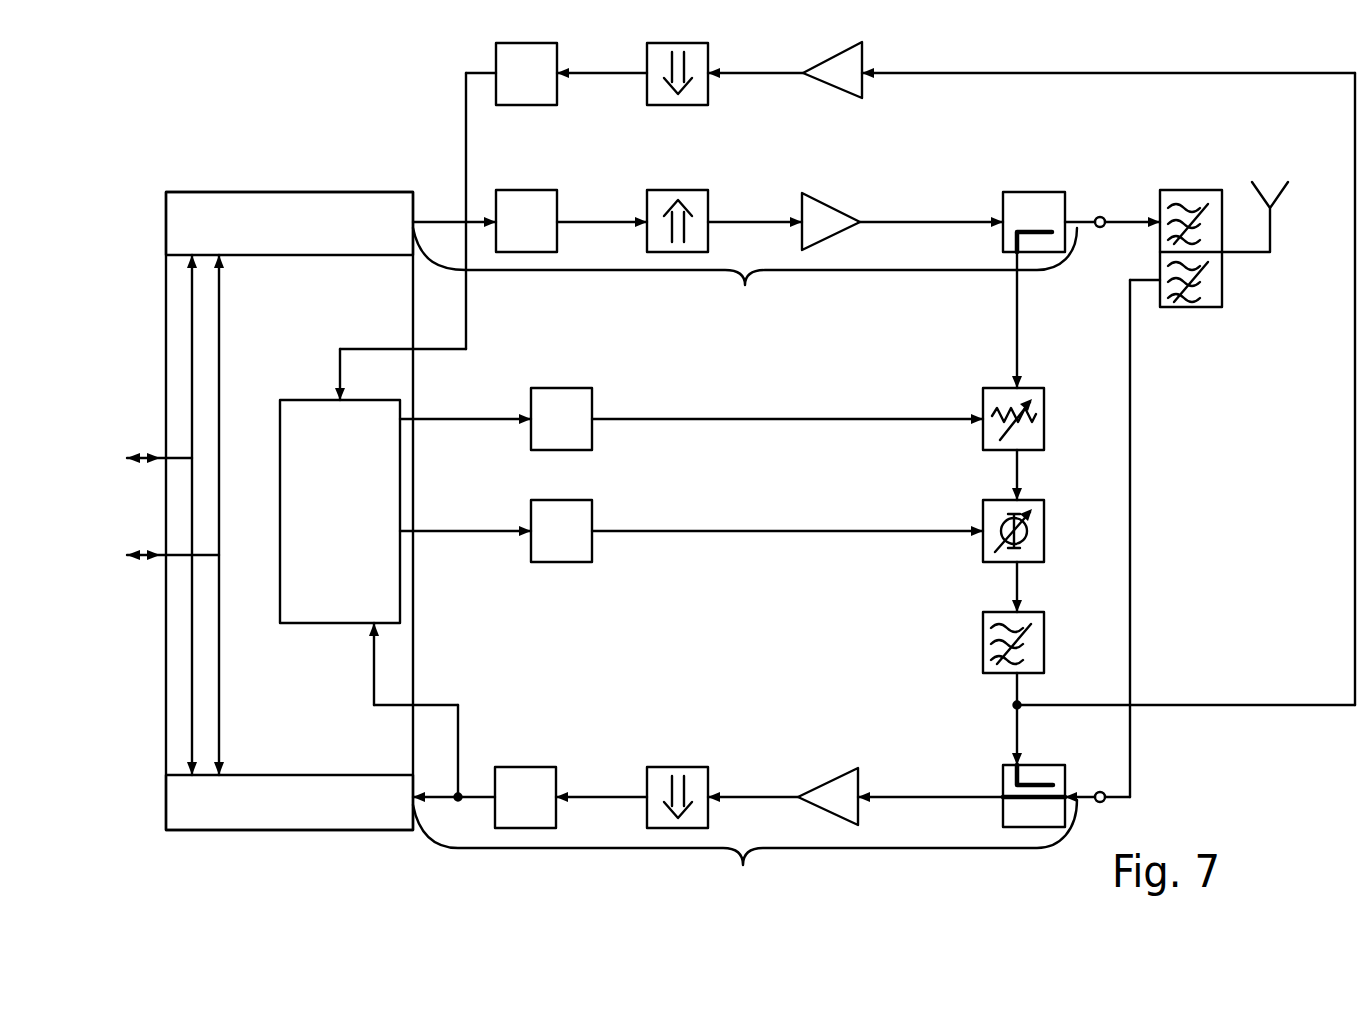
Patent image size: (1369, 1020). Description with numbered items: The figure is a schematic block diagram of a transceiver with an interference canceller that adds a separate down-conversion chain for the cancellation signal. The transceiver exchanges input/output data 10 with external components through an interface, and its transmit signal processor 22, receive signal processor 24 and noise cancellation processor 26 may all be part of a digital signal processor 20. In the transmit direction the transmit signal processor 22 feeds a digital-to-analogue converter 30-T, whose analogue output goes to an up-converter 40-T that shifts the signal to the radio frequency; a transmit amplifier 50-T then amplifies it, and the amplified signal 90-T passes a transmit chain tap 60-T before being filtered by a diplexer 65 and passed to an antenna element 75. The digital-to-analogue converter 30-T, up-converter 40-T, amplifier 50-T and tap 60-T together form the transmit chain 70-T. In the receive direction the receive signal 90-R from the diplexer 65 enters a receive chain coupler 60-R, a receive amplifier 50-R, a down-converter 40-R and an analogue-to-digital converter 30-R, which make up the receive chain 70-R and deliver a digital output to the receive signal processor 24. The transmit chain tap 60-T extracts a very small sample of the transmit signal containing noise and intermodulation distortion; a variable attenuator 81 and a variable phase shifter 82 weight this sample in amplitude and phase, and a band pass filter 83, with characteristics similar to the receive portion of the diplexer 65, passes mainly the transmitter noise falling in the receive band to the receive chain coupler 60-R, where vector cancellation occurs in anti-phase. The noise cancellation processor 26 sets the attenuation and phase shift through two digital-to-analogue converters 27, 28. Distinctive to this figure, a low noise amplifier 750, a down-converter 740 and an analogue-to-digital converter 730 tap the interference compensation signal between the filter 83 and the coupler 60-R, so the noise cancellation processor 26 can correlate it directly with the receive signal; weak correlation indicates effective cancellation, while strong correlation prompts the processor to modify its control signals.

The input/output data 10 is at (150, 462).
The digital signal processor 20 is at (166, 310).
The transmit signal processor 22 is at (395, 192).
The receive signal processor 24 is at (397, 830).
The noise cancellation processor 26 is at (300, 623).
The digital-to-analogue converter 27 is at (592, 435).
The digital-to-analogue converter 28 is at (592, 548).
The digital-to-analogue converter 30-T is at (523, 190).
The up-converter 40-T is at (682, 190).
The transmit amplifier 50-T is at (832, 202).
The transmit chain tap 60-T is at (1030, 192).
The transmit chain 70-T is at (763, 232).
The amplified signal 90-T is at (1103, 216).
The diplexer 65 is at (1222, 294).
The antenna element 75 is at (1258, 254).
The variable attenuator 81 is at (1044, 420).
The variable phase shifter 82 is at (1044, 532).
The band pass filter 83 is at (1044, 645).
The analogue-to-digital converter 30-R is at (528, 767).
The down-converter 40-R is at (686, 767).
The receive amplifier 50-R is at (840, 787).
The receive chain coupler 60-R is at (1003, 777).
The receive chain 70-R is at (745, 807).
The receive signal 90-R is at (1100, 792).
The analogue-to-digital converter 730 is at (557, 97).
The down-converter 740 is at (708, 97).
The low noise amplifier 750 is at (862, 95).